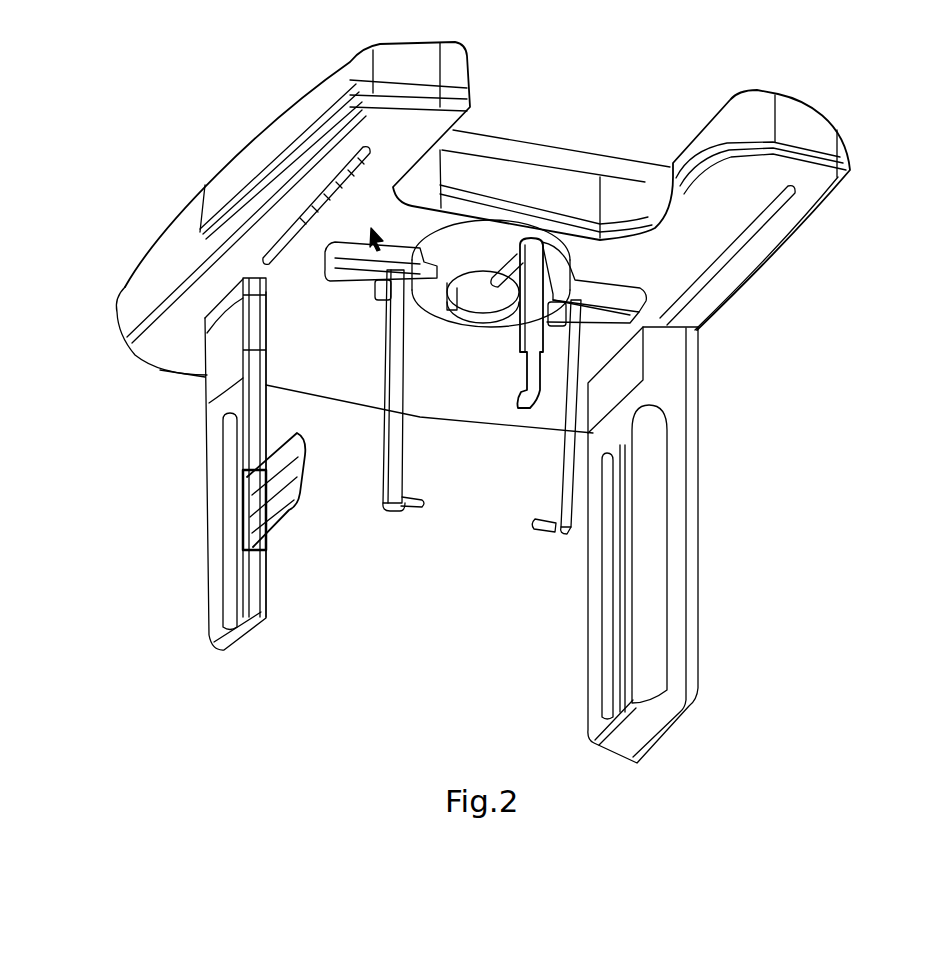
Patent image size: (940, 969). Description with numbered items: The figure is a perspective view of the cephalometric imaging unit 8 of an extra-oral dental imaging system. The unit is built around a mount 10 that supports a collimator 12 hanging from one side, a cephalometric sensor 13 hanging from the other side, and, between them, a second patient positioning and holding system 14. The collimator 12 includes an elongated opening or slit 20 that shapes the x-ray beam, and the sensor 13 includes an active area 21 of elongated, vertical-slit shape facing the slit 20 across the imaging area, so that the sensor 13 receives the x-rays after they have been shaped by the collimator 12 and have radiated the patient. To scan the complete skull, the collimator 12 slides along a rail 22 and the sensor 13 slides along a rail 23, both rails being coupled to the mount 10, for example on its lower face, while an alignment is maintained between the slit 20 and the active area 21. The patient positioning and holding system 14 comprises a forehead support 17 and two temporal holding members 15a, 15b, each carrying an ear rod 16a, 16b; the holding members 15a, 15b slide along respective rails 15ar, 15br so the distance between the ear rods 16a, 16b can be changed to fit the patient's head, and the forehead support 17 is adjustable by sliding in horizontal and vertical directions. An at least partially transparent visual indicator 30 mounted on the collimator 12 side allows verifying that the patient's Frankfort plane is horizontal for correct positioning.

The cephalometric imaging unit 8 is at (710, 60).
The mount 10 is at (302, 113).
The collimator 12 is at (218, 553).
The cephalometric sensor 13 is at (672, 648).
The second patient positioning and holding system 14 is at (613, 270).
The temporal holding member 15a is at (397, 423).
The temporal holding member 15b is at (562, 437).
The rail 15ar is at (323, 267).
The rail 15br is at (630, 313).
The ear rod 16a is at (414, 507).
The ear rod 16b is at (541, 530).
The forehead support 17 is at (537, 398).
The slit 20 is at (228, 457).
The active area 21 is at (604, 568).
The rail 22 is at (327, 183).
The rail 23 is at (790, 202).
The visual indicator 30 is at (285, 533).